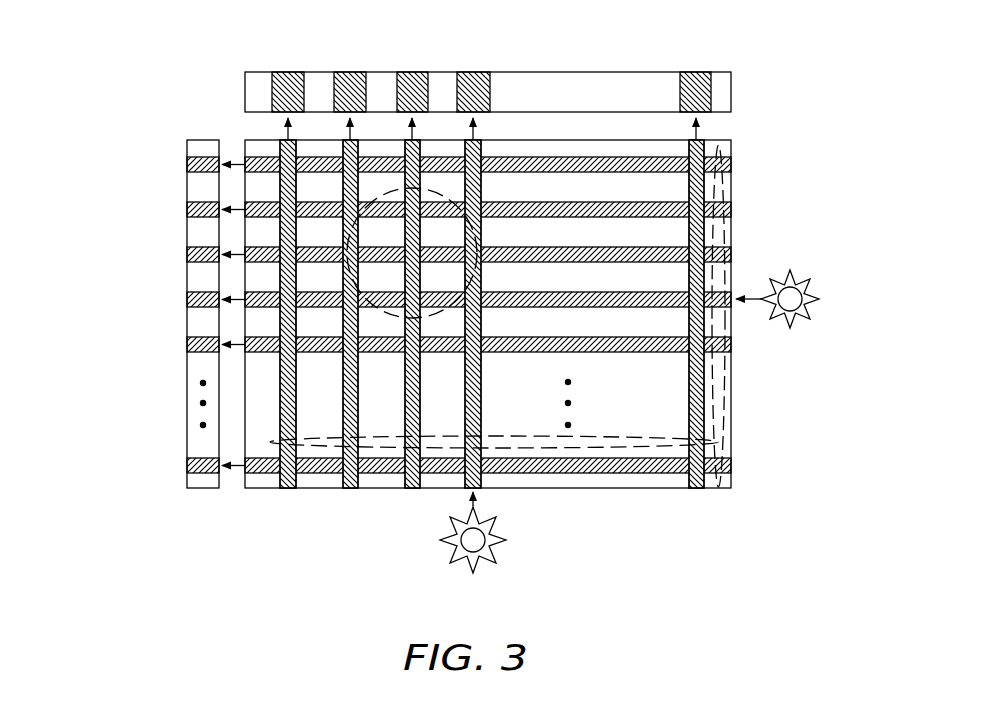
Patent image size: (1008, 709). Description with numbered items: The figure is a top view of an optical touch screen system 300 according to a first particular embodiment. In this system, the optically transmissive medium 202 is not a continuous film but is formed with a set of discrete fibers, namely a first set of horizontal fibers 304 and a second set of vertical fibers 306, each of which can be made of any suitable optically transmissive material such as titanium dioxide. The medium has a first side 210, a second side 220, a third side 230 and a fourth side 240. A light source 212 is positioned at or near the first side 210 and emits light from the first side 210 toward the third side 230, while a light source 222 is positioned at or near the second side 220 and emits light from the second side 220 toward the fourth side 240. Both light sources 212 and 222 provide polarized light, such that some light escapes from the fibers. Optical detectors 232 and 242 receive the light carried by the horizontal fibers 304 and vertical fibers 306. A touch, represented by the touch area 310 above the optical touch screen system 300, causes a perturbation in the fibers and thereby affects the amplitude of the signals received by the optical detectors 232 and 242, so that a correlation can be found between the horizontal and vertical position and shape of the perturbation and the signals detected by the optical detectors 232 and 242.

The optical touch screen system 300 is at (145, 60).
The touch area 310 is at (430, 189).
The optical detector 242 is at (731, 97).
The fourth side 240 is at (731, 140).
The horizontal fibers 304 is at (723, 190).
The first side 210 is at (731, 232).
The light source 212 is at (794, 273).
The optical detector 232 is at (187, 480).
The third side 230 is at (241, 468).
The vertical fibers 306 is at (388, 452).
The light source 222 is at (497, 533).
The optically transmissive medium 202 is at (660, 418).
The second side 220 is at (710, 492).